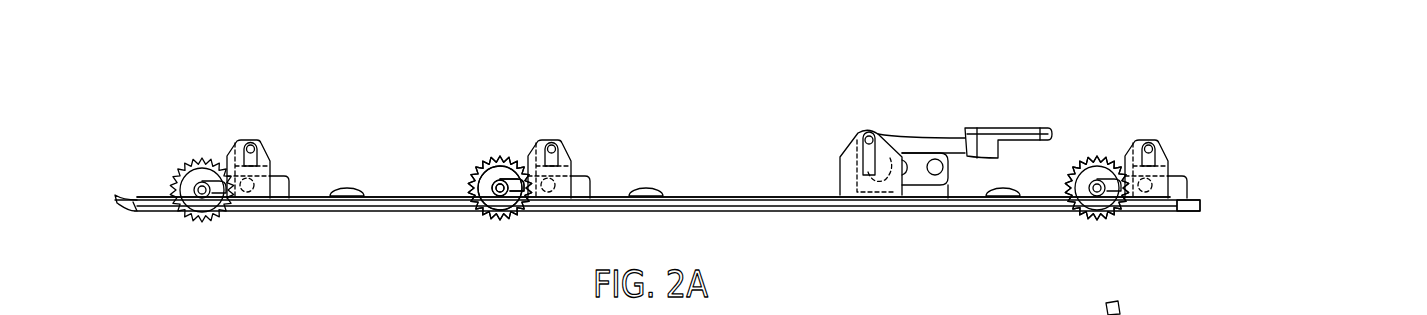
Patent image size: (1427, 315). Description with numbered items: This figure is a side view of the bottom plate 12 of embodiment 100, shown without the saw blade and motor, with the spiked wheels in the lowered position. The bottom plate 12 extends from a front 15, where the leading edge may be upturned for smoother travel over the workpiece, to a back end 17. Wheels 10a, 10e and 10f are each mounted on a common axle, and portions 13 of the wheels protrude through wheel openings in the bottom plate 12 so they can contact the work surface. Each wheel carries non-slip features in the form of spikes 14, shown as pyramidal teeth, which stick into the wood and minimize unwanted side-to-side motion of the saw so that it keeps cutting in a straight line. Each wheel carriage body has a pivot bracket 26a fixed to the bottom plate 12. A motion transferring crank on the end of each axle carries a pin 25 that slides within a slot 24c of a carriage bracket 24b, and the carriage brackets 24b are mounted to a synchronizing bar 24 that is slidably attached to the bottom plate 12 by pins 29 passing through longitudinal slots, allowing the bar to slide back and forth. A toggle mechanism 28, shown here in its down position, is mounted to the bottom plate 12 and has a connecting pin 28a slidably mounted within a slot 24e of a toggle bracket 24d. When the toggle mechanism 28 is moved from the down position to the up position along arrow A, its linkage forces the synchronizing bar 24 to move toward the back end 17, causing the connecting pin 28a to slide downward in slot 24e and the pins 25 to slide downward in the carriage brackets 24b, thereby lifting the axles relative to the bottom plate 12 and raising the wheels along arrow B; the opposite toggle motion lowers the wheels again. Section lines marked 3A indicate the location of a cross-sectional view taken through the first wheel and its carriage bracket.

The embodiment 100 is at (1273, 112).
The bottom plate 12 is at (389, 215).
The portions of wheels 13 is at (481, 219).
The spikes 14 is at (505, 218).
The front 15 is at (127, 226).
The back end 17 is at (1197, 224).
The wheel 10a is at (178, 168).
The wheel 10e is at (480, 165).
The wheel 10f is at (1090, 170).
The synchronizing bar 24 is at (732, 193).
The carriage bracket 24b is at (572, 170).
The slot 24c is at (250, 163).
The toggle bracket 24d is at (846, 154).
The slot 24e is at (862, 152).
The pin 25 is at (549, 141).
The pivot bracket 26a is at (272, 173).
The toggle mechanism 28 is at (935, 131).
The connecting pin 28a is at (866, 131).
The pin 29 is at (346, 189).
The section line 3A is at (236, 263).
The arrow A is at (1027, 122).
The arrow B is at (478, 153).